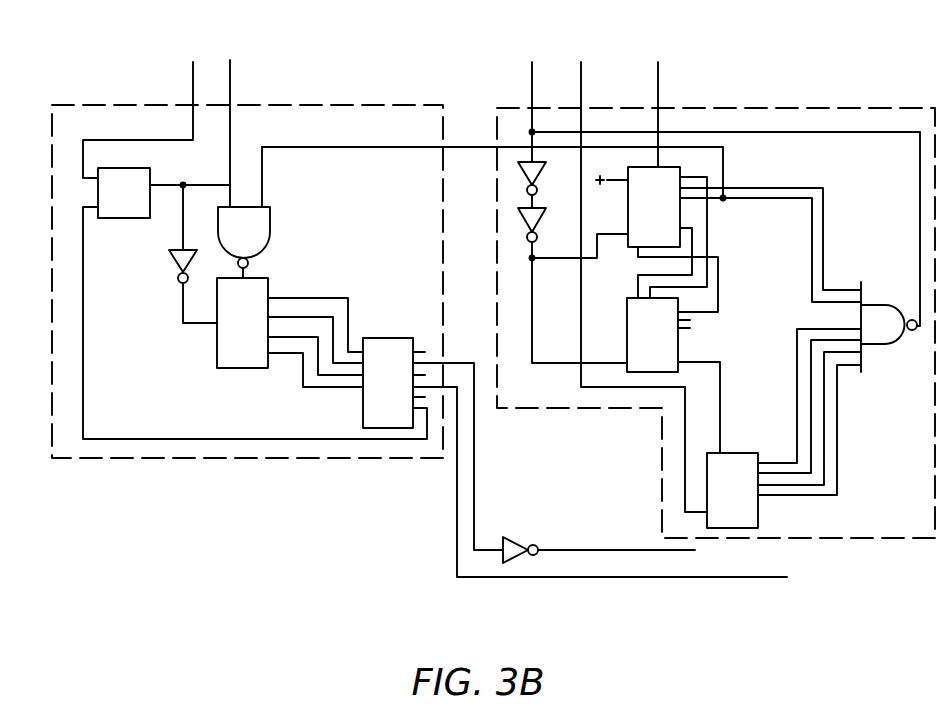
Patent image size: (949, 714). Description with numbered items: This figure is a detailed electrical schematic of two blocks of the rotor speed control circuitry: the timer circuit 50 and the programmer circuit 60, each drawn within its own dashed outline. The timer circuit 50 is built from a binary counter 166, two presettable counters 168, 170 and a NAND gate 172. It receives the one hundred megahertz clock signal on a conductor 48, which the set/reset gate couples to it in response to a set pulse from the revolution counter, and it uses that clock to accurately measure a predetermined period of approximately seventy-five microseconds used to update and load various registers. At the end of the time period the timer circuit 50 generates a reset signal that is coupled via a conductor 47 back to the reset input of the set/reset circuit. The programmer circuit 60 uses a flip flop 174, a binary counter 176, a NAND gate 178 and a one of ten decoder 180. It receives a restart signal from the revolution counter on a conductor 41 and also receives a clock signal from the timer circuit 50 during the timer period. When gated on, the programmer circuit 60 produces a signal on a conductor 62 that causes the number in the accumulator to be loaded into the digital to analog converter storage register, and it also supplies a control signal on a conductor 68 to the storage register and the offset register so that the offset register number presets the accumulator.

The conductor 41 is at (193, 85).
The conductor 47 is at (533, 90).
The conductor 48 is at (583, 85).
The timer circuit 50 is at (840, 237).
The programmer circuit 60 is at (322, 238).
The conductor 62 is at (718, 577).
The conductor 68 is at (623, 550).
The binary counter 166 is at (784, 428).
The presettable counter 168 is at (673, 375).
The presettable counter 170 is at (744, 239).
The NAND gate 172 is at (889, 327).
The flip flop 174 is at (164, 193).
The binary counter 176 is at (290, 332).
The NAND gate 178 is at (244, 169).
The one of ten decoder 180 is at (255, 323).